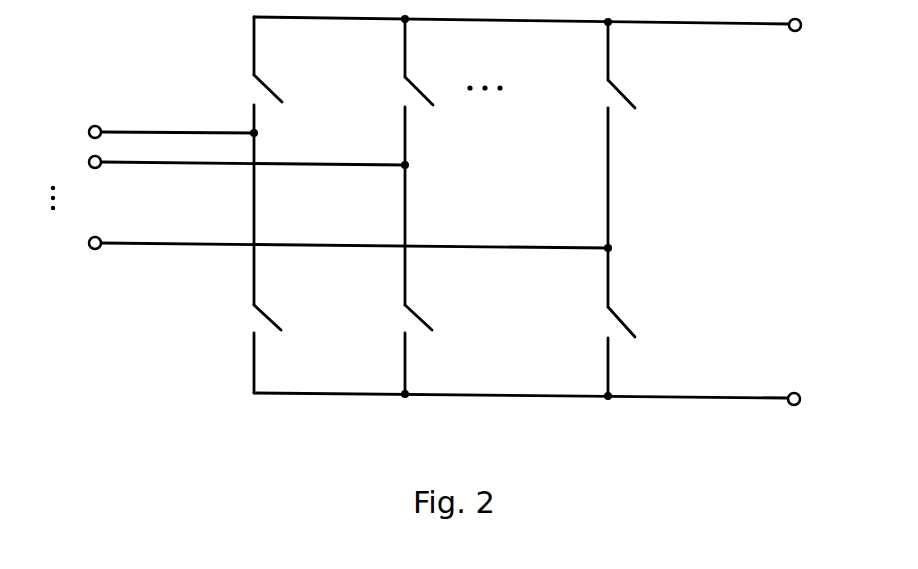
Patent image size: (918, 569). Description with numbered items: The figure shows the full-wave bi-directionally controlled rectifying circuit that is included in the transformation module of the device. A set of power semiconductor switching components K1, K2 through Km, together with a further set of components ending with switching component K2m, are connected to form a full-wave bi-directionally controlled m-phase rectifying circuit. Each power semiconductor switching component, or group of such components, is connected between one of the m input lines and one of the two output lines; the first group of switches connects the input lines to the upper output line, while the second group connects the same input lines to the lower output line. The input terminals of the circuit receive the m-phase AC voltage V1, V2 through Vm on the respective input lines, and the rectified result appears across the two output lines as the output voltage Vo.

The switching component K1 is at (229, 86).
The switching component K2 is at (389, 96).
The switching component Km is at (595, 101).
The switching component K2m is at (595, 331).
The m-phase AC voltage V1 is at (145, 133).
The m-phase AC voltage V2 is at (221, 164).
The m-phase AC voltage Vm is at (322, 237).
The output voltage Vo is at (795, 212).